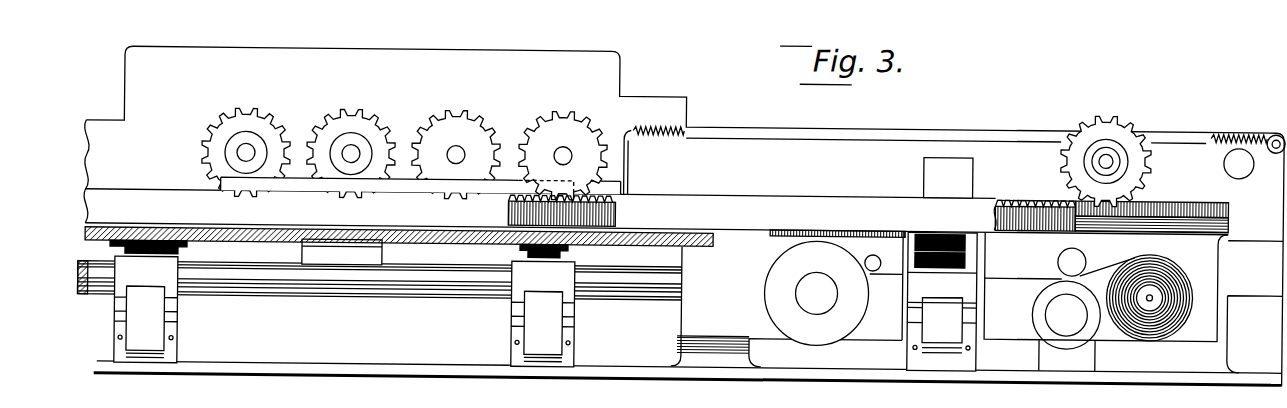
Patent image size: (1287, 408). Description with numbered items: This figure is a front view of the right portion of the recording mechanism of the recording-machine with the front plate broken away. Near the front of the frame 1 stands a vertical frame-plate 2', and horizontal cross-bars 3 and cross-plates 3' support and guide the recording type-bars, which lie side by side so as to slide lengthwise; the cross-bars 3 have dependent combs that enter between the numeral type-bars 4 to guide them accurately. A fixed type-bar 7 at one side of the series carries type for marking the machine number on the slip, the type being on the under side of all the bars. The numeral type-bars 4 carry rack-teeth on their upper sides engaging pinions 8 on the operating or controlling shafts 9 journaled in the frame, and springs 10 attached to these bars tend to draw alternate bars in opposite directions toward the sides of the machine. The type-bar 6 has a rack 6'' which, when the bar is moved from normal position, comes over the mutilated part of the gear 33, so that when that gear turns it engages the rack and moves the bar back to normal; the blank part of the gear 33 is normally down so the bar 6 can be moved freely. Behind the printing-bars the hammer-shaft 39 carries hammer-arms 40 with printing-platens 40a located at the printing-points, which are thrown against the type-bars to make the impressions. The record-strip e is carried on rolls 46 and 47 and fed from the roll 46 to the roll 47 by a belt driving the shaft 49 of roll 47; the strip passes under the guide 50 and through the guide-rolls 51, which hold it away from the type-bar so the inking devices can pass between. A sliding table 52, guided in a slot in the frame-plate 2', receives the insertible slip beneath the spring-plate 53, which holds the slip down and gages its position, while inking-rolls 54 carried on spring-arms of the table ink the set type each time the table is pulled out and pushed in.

The frame 1 is at (852, 379).
The vertical frame-plate 2' is at (683, 216).
The horizontal cross-bar 3 is at (999, 249).
The cross-plate 3' is at (656, 214).
The numeral type-bar 4 is at (598, 223).
The type-bar 6 is at (1035, 198).
The rack 6'' is at (1034, 184).
The fixed type-bar 7 is at (167, 193).
The pinion 8 is at (412, 142).
The operating or controlling shaft 9 is at (244, 152).
The spring 10 is at (665, 128).
The mutilated gear 33 is at (1140, 165).
The hammer-shaft 39 is at (374, 290).
The hammer-arm 40 is at (178, 307).
The printing-platen 40a is at (152, 325).
The roll 46 is at (767, 290).
The roll 47 is at (1170, 268).
The shaft of roll 47 49 is at (1150, 297).
The guide 50 is at (870, 250).
The guide-roll 51 is at (1083, 258).
The sliding table 52 is at (470, 242).
The spring-plate 53 is at (278, 250).
The inking-roll 54 is at (570, 257).
The record-strip e is at (1016, 275).